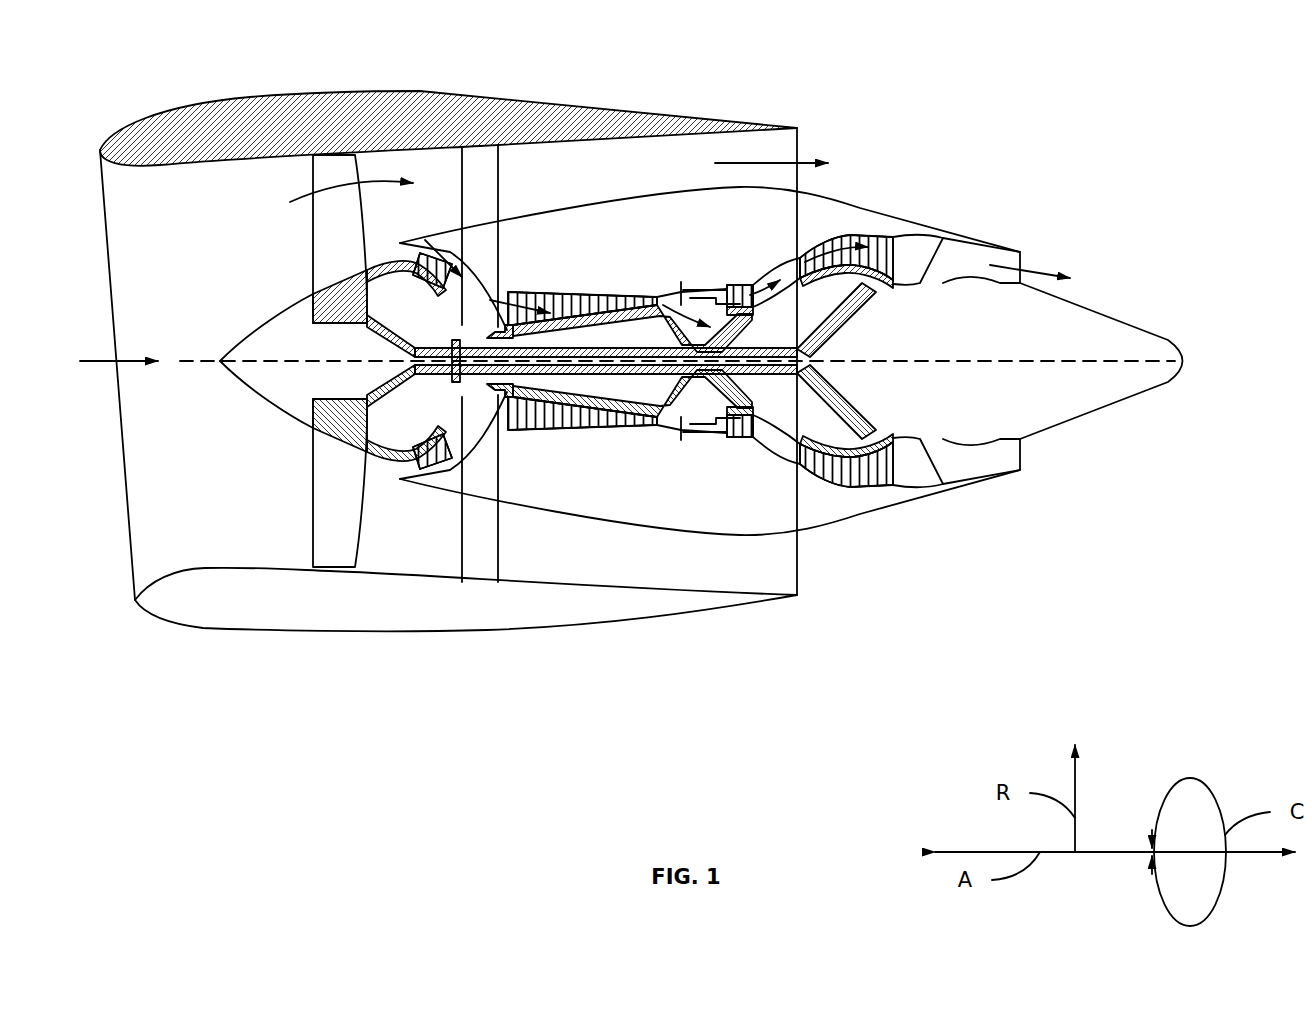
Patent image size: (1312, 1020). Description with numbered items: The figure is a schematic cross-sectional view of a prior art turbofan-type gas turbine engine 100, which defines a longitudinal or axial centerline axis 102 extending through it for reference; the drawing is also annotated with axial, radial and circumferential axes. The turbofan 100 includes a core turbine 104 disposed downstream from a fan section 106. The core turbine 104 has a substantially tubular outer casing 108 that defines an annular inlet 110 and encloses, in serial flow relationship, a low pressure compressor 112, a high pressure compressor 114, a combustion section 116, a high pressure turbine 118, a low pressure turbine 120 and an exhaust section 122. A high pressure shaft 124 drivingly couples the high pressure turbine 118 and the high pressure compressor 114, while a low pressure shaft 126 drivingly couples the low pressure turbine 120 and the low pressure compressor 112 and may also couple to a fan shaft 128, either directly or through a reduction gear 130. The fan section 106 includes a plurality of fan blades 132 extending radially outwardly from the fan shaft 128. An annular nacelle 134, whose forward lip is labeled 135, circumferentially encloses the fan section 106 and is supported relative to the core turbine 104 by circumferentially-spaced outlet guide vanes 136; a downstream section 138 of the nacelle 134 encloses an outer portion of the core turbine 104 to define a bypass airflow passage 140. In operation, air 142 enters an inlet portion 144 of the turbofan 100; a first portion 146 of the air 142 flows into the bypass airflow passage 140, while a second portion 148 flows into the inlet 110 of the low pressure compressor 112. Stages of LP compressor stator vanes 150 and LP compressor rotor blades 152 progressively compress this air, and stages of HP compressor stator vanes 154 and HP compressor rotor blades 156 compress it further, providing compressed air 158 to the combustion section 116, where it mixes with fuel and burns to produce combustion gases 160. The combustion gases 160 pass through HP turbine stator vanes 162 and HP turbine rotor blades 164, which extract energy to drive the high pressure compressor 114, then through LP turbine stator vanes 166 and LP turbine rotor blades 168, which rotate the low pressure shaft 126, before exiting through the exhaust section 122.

The turbofan gas turbine engine 100 is at (938, 100).
The longitudinal centerline axis 102 is at (965, 358).
The core turbine 104 is at (632, 238).
The fan section 106 is at (232, 225).
The outer casing 108 is at (648, 522).
The annular inlet 110 is at (408, 467).
The low pressure compressor 112 is at (452, 452).
The high pressure compressor 114 is at (538, 433).
The combustion section 116 is at (688, 436).
The high pressure turbine 118 is at (762, 418).
The low pressure turbine 120 is at (882, 487).
The exhaust section 122 is at (1024, 258).
The high pressure shaft 124 is at (748, 334).
The low pressure shaft 126 is at (460, 347).
The fan shaft 128 is at (362, 325).
The reduction gear 130 is at (458, 443).
The fan blades 132 is at (312, 497).
The nacelle 134 is at (355, 634).
The nacelle inlet lip 135 is at (370, 91).
The outlet guide vanes 136 is at (500, 182).
The downstream section of the nacelle 138 is at (703, 108).
The bypass airflow passage 140 is at (606, 175).
The air 142 is at (130, 358).
The inlet portion 144 is at (133, 568).
The first portion of the air 146 is at (748, 162).
The second portion of the air 148 is at (387, 257).
The LP compressor stator vanes 150 is at (424, 480).
The LP compressor rotor blades 152 is at (428, 477).
The HP compressor stator vanes 154 is at (630, 428).
The HP compressor rotor blades 156 is at (640, 426).
The compressed air 158 is at (663, 305).
The combustion gases 160 is at (743, 285).
The HP turbine stator vanes 162 is at (740, 427).
The HP turbine rotor blades 164 is at (746, 408).
The LP turbine stator vanes 166 is at (810, 250).
The LP turbine rotor blades 168 is at (845, 232).